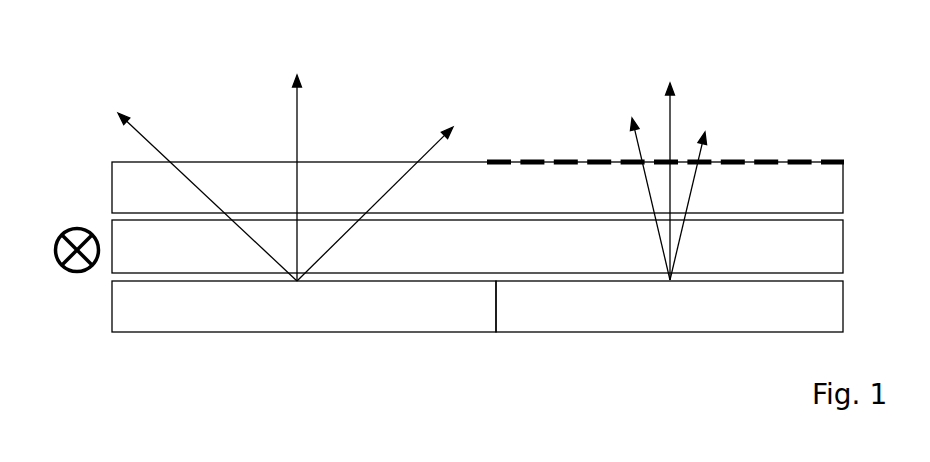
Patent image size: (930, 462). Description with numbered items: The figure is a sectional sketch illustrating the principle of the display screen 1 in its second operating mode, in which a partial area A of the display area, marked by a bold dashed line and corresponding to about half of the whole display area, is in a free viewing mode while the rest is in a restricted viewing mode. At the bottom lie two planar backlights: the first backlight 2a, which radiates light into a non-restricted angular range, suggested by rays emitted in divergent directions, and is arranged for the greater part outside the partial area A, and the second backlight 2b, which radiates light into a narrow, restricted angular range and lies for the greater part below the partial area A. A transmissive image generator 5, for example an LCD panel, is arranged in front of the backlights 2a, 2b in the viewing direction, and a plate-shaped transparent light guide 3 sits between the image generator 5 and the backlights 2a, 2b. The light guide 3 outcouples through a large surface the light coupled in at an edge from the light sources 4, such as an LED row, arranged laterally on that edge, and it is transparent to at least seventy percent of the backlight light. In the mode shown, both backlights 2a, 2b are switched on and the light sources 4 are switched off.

The display screen 1 is at (502, 247).
The first backlight 2a is at (304, 306).
The second backlight 2b is at (669, 306).
The light guide 3 is at (477, 246).
The light sources 4 is at (78, 221).
The image generator 5 is at (477, 187).
The partial area A is at (575, 161).